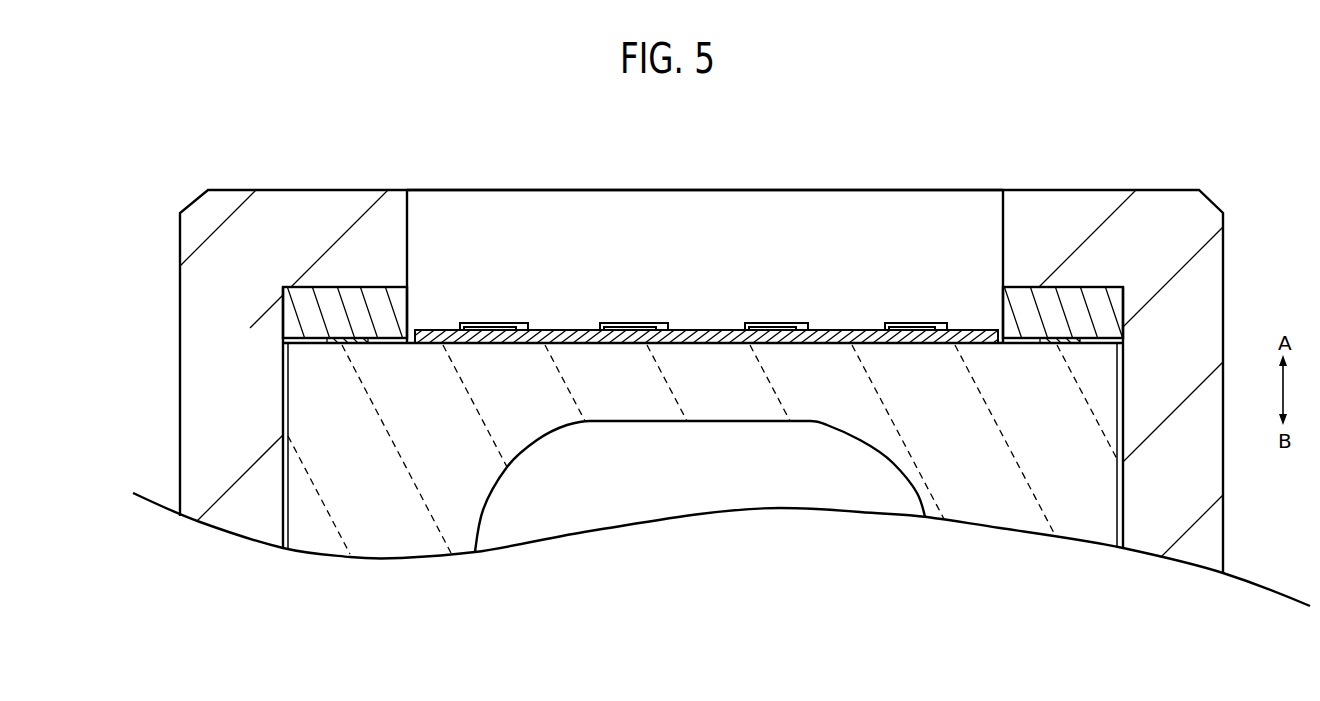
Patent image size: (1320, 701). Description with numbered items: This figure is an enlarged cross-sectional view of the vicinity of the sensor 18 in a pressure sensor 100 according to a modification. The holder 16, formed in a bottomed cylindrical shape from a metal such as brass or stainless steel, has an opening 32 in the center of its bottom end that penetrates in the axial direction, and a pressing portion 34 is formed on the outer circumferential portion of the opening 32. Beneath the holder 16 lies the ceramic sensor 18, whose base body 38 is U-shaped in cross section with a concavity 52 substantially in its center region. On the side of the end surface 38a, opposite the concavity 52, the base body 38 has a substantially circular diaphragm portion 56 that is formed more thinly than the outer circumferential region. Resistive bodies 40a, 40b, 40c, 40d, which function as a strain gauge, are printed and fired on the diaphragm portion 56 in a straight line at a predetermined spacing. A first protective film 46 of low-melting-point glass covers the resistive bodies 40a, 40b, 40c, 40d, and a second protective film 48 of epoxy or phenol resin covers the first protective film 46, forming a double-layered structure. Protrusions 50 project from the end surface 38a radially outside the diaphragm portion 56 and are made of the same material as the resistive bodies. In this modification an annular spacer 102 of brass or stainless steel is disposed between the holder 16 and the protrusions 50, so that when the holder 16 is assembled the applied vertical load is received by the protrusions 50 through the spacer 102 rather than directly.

The pressure sensor 100 is at (587, 137).
The holder 16 is at (166, 385).
The pressing portion 34 is at (372, 218).
The opening 32 is at (695, 218).
The spacer 102 is at (383, 305).
The base body 38 is at (1003, 512).
The end surface 38a is at (1090, 323).
The protrusions 50 is at (341, 345).
The first protective film 46 is at (720, 347).
The second protective film 48 is at (558, 330).
The resistive body 40a is at (503, 347).
The resistive body 40b is at (632, 347).
The resistive body 40c is at (780, 348).
The resistive body 40d is at (935, 347).
The diaphragm portion 56 is at (756, 420).
The concavity 52 is at (697, 510).
The sensor 18 is at (379, 540).